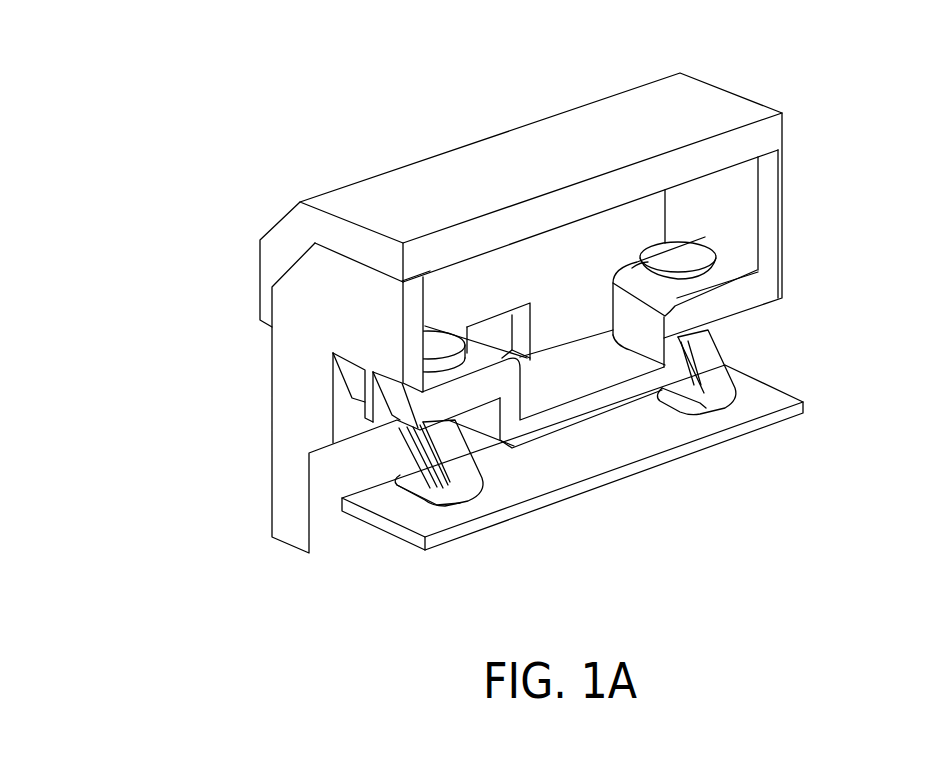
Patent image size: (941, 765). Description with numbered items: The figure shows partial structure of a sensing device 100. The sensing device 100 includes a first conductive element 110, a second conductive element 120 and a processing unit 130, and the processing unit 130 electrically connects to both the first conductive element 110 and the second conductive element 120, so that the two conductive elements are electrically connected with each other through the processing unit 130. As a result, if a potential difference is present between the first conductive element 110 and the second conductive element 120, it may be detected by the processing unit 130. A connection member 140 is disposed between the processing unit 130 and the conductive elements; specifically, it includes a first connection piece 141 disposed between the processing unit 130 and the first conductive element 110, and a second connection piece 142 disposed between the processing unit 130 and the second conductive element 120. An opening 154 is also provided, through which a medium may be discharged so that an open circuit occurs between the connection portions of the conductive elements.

The sensing device 100 is at (207, 63).
The first conductive element 110 is at (445, 345).
The opening 154 is at (502, 337).
The second conductive element 120 is at (700, 253).
The processing unit 130 is at (777, 398).
The connection member 140 is at (710, 533).
The first connection piece 141 is at (457, 472).
The second connection piece 142 is at (710, 382).